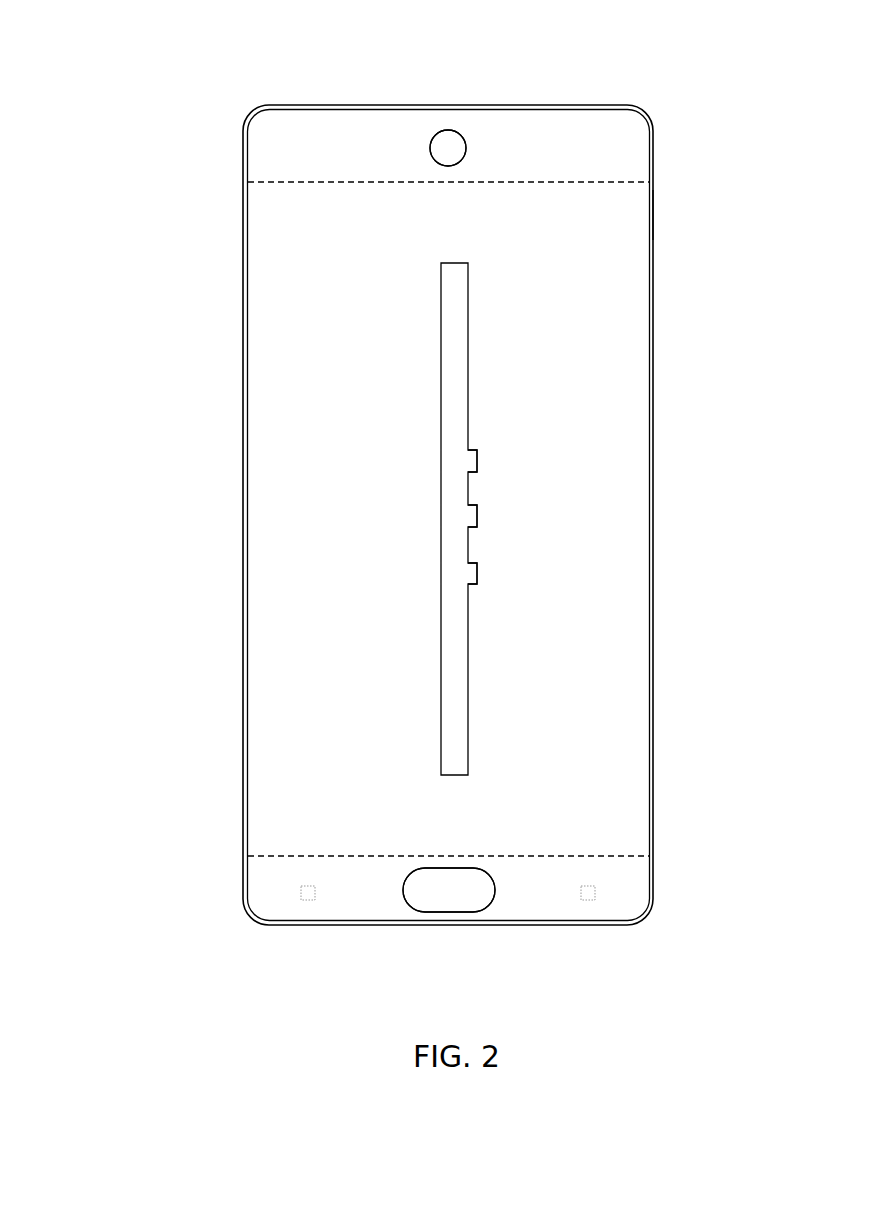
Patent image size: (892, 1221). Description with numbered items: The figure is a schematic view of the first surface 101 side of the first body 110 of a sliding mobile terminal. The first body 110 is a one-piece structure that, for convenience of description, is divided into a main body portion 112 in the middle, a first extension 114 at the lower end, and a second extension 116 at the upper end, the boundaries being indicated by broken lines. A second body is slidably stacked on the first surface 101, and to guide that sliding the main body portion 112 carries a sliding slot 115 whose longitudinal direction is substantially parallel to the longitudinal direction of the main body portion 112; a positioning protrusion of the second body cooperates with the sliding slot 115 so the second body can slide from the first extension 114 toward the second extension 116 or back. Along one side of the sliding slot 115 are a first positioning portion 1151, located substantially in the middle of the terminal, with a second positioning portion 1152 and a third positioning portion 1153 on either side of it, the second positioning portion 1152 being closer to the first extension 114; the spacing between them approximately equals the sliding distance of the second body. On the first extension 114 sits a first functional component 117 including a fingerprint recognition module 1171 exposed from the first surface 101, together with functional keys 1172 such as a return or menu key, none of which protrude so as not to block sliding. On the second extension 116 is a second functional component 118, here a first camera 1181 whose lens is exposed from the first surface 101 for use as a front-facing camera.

The first body 110 is at (471, 49).
The second extension 116 is at (635, 143).
The first surface 101 is at (641, 212).
The main body portion 112 is at (640, 272).
The second functional component 118 is at (445, 150).
The first camera 1181 is at (448, 148).
The sliding slot 115 is at (447, 387).
The third positioning portion 1153 is at (474, 460).
The first positioning portion 1151 is at (474, 517).
The second positioning portion 1152 is at (474, 577).
The first extension 114 is at (637, 885).
The first functional component 117 is at (460, 896).
The fingerprint recognition module 1171 is at (449, 890).
The functional key 1172 is at (310, 896).